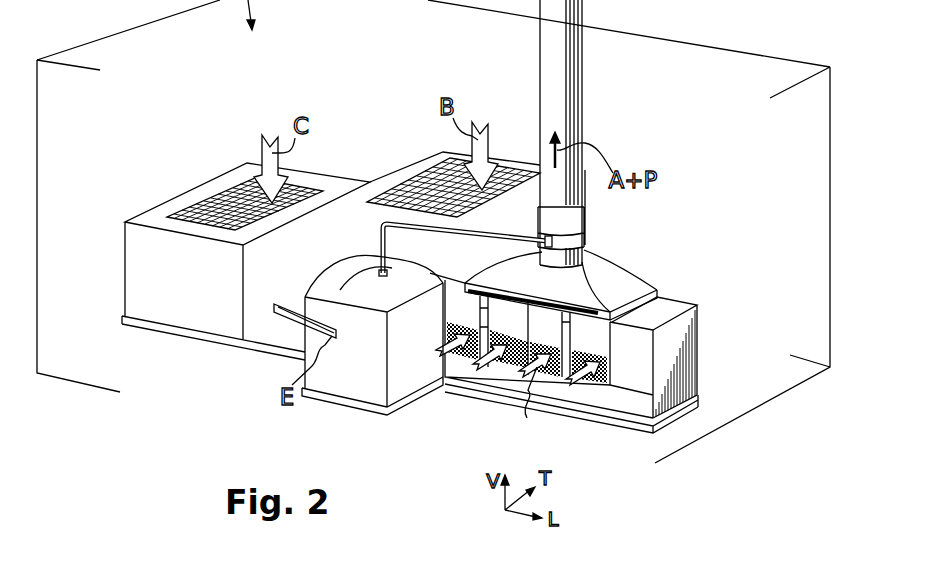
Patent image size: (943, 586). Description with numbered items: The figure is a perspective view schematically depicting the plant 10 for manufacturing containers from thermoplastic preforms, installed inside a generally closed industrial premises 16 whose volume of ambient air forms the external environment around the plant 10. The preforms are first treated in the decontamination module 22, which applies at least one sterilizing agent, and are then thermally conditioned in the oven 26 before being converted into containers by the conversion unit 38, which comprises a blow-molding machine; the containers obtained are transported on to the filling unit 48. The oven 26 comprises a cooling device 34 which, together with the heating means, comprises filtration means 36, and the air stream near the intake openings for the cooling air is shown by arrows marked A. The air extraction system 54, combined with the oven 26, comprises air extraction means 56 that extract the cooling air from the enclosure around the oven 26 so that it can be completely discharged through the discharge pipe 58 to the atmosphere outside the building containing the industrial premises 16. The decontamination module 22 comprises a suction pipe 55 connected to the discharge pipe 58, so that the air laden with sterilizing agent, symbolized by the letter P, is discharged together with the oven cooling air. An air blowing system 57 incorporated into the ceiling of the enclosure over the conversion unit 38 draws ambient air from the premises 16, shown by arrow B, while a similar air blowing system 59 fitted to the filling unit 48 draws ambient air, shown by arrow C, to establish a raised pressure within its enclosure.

The plant 10 is at (146, 138).
The industrial premises 16 is at (779, 89).
The filling unit 48 is at (160, 281).
The air blowing system 59 is at (231, 200).
The air blowing system 57 is at (429, 182).
The suction pipe 55 is at (490, 243).
The discharge pipe 58 is at (565, 197).
The air extraction means 56 is at (617, 280).
The air extraction system 54 is at (586, 355).
The filtration means 36 is at (462, 352).
The cooling device 34 is at (596, 400).
The oven 26 is at (682, 362).
The decontamination module 22 is at (360, 380).
The conversion unit 38 is at (270, 330).